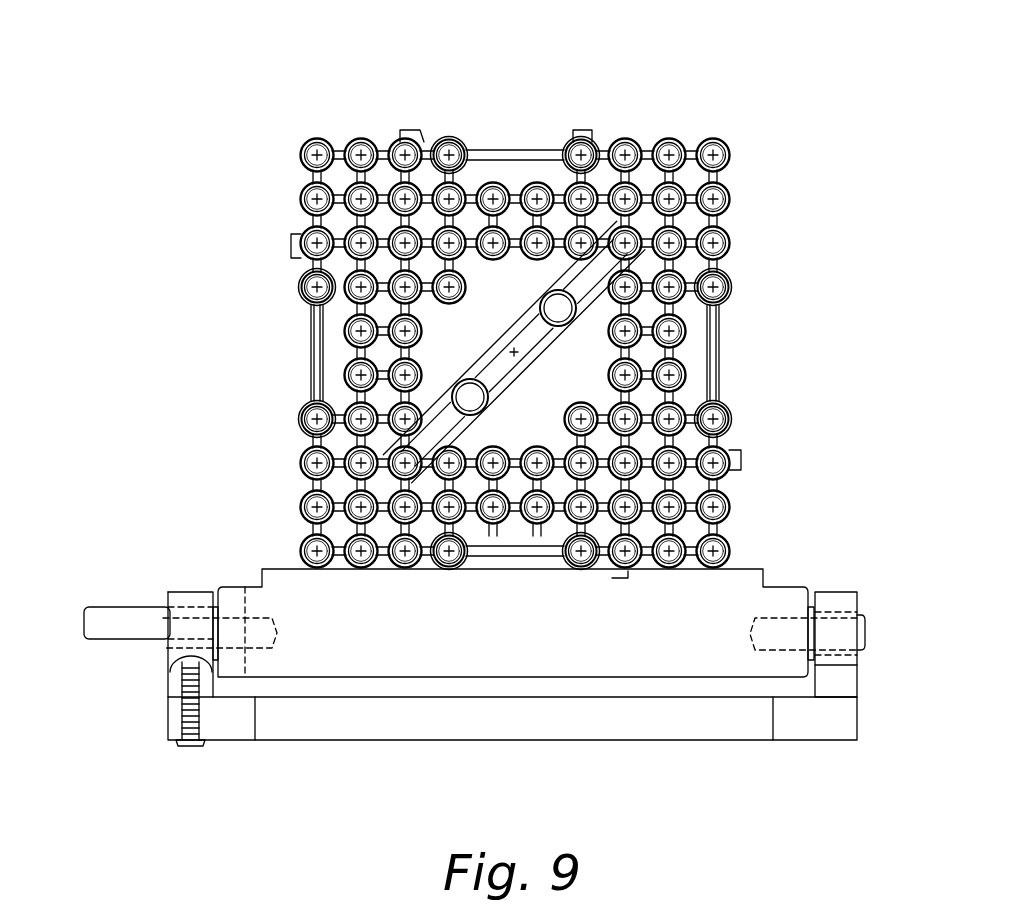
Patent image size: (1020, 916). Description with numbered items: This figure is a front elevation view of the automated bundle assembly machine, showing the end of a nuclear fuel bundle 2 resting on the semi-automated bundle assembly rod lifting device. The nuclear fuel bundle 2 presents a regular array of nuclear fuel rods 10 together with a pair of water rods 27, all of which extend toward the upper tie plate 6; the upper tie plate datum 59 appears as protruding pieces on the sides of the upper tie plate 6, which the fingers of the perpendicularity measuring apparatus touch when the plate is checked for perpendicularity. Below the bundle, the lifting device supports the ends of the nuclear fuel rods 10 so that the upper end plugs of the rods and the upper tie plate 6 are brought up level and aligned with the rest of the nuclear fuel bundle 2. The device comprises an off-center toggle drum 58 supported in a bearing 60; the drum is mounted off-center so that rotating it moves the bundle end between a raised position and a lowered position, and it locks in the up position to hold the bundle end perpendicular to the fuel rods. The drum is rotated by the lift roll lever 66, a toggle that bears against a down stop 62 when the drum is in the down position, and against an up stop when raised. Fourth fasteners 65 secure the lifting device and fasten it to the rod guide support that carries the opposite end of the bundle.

The nuclear fuel bundle 2 is at (730, 403).
The upper tie plate 6 is at (712, 338).
The nuclear fuel rods 10 is at (625, 140).
The water rods 27 is at (467, 395).
The off-center toggle drum 58 is at (470, 640).
The upper tie plate datum 59 is at (410, 132).
The bearing 60 is at (838, 612).
The down stop 62 is at (175, 677).
The fourth fasteners 65 is at (186, 748).
The lift roll lever 66 is at (120, 610).